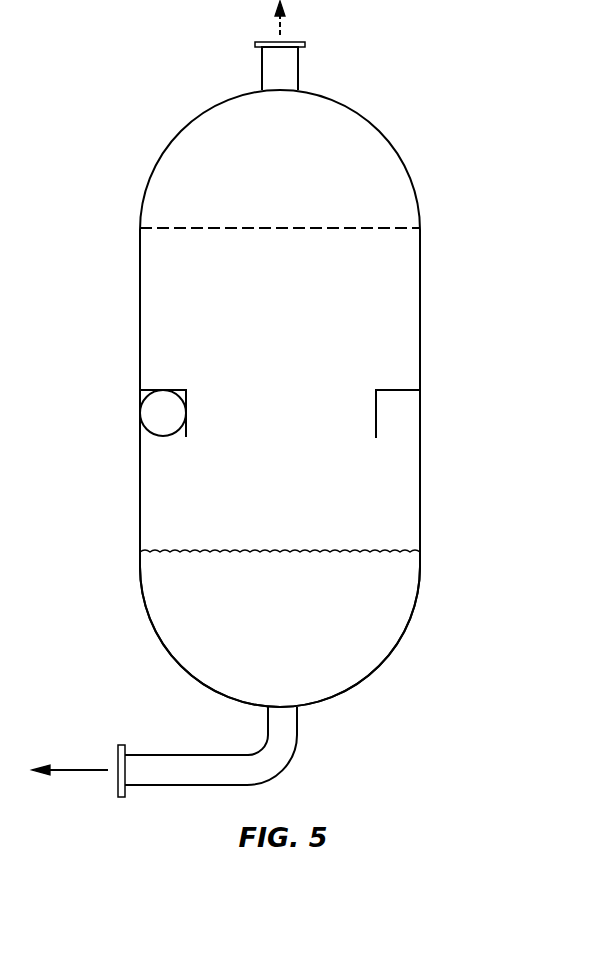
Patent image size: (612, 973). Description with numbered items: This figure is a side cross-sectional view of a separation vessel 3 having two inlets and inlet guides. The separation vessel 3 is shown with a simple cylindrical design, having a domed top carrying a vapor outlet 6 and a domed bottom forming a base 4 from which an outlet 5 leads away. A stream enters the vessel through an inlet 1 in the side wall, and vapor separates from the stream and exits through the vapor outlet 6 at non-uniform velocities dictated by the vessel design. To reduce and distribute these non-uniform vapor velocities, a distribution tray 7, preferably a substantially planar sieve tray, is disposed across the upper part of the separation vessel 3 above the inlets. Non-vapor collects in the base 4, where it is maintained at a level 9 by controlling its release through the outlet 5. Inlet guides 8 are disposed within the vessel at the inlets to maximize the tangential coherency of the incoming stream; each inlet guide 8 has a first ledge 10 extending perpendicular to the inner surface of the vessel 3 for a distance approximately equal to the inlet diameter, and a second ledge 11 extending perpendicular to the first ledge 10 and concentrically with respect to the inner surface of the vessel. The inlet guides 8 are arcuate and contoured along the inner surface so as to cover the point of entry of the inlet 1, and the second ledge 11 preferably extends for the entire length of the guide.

The inlet 1 is at (147, 397).
The separation vessel 3 is at (163, 150).
The base 4 is at (153, 575).
The outlet 5 is at (190, 753).
The vapor outlet 6 is at (260, 66).
The distribution tray 7 is at (335, 228).
The inlet guide 8 is at (165, 390).
The level 9 is at (400, 550).
The first ledge 10 is at (388, 390).
The second ledge 11 is at (376, 413).